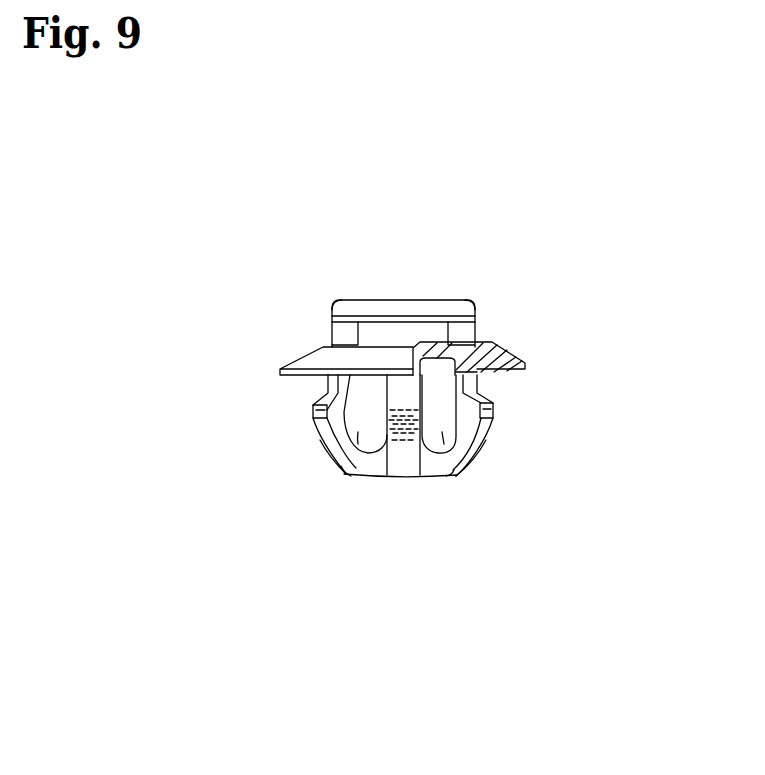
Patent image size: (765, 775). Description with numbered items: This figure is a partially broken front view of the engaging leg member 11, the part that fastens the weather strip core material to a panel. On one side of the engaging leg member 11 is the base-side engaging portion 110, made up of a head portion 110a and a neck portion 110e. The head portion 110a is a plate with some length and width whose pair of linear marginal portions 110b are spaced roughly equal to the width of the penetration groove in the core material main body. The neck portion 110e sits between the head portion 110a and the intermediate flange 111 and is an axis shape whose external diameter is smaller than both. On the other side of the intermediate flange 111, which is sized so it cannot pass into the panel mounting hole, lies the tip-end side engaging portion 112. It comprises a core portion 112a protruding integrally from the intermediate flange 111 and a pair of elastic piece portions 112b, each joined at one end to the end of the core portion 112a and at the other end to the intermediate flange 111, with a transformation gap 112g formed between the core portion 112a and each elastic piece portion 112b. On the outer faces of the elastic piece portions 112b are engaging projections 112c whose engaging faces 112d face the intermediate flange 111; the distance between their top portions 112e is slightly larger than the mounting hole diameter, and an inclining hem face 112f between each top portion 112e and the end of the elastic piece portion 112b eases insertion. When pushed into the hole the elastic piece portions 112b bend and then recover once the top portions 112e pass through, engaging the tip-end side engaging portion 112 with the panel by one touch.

The engaging leg member 11 is at (512, 297).
The base-side engaging portion 110 is at (377, 330).
The head portion 110a is at (395, 298).
The linear marginal portions 110b is at (333, 317).
The neck portion 110e is at (423, 325).
The intermediate flange 111 is at (281, 349).
The tip-end side engaging portion 112 is at (492, 404).
The core portion 112a is at (401, 440).
The elastic piece portions 112b is at (320, 437).
The engaging projections 112c is at (492, 416).
The engaging faces 112d is at (317, 405).
The top portions 112e is at (318, 420).
The inclining hem face 112f is at (323, 448).
The transformation gap 112g is at (343, 467).